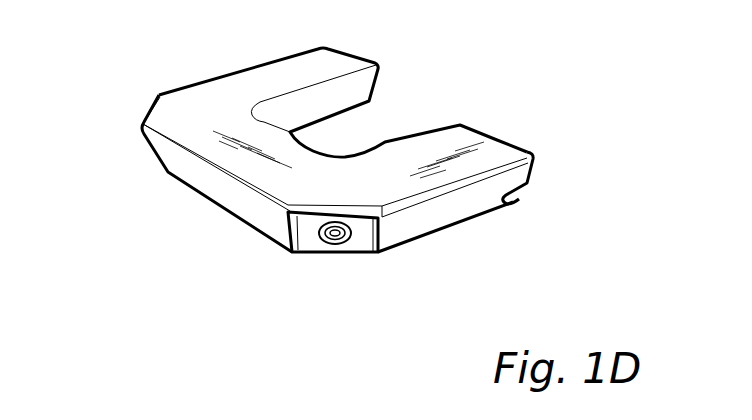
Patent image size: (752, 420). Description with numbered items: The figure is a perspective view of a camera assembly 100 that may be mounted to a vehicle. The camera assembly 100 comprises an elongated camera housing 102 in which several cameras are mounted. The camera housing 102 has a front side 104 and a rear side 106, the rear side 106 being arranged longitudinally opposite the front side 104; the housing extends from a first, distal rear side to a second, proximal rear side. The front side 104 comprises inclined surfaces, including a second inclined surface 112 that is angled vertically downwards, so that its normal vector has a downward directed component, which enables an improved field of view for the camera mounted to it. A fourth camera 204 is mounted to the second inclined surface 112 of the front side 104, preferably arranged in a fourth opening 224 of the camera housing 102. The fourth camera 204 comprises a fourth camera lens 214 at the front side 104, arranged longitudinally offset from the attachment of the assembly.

The camera assembly 100 is at (470, 64).
The camera housing 102 is at (238, 159).
The front side 104 is at (147, 120).
The rear side 106 is at (361, 53).
The second inclined surface 112 is at (368, 230).
The fourth camera 204 is at (352, 230).
The fourth camera lens 214 is at (335, 246).
The fourth opening 224 is at (334, 221).